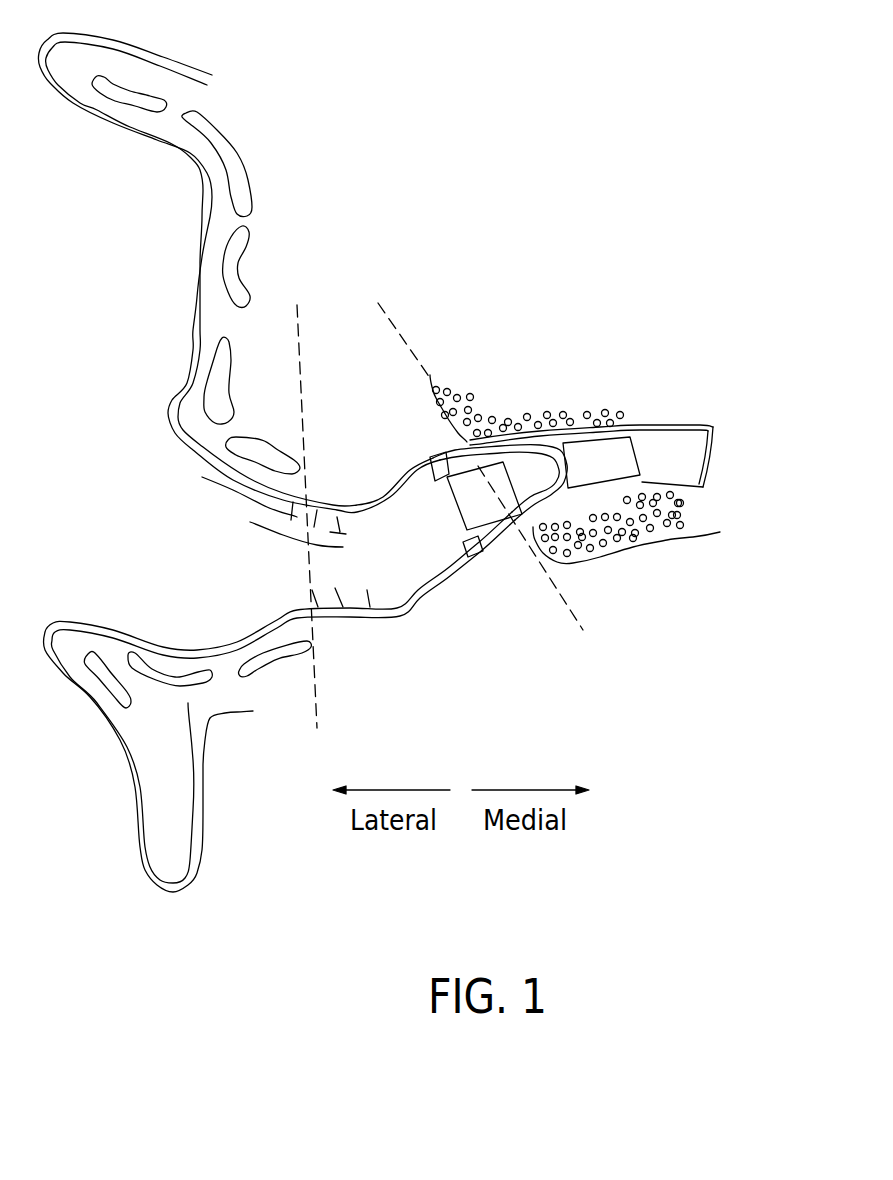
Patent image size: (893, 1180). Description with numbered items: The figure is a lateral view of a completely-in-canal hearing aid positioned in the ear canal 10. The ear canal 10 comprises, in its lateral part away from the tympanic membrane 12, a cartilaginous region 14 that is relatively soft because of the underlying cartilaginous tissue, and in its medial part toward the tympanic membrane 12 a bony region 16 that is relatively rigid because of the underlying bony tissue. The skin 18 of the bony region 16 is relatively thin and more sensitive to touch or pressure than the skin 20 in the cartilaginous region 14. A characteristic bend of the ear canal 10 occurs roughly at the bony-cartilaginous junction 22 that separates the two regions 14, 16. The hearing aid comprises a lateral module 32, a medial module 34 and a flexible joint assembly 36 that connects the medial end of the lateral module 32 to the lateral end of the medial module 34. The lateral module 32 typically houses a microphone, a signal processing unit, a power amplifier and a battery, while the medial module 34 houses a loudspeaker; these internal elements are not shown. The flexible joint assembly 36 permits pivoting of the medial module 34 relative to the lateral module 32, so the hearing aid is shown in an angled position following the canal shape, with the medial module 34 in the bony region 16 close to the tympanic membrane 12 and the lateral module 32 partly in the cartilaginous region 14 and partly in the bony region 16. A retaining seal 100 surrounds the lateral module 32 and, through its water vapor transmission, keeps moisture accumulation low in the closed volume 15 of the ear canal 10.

The ear canal 10 is at (262, 563).
The tympanic membrane 12 is at (677, 467).
The cartilaginous region 14 is at (570, 607).
The closed volume 15 is at (707, 480).
The bony region 16 is at (553, 585).
The skin of the bony region 18 is at (587, 440).
The skin in the cartilaginous region 20 is at (367, 503).
The bony-cartilaginous junction 22 is at (400, 326).
The lateral module 32 is at (482, 488).
The medial module 34 is at (619, 456).
The flexible joint assembly 36 is at (561, 440).
The retaining seal 100 is at (433, 453).